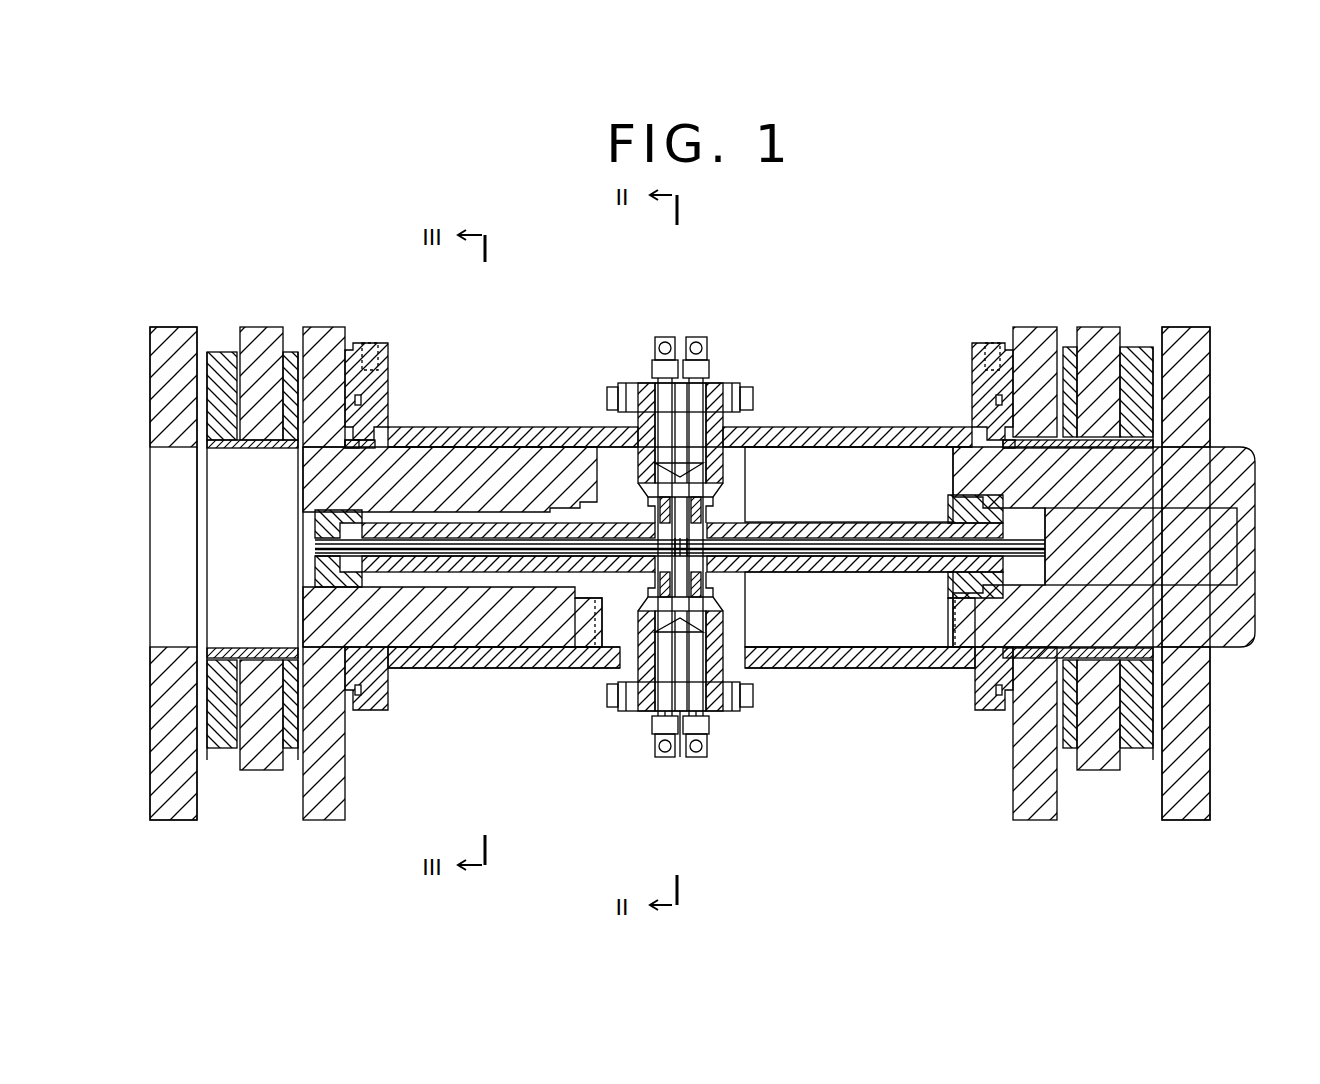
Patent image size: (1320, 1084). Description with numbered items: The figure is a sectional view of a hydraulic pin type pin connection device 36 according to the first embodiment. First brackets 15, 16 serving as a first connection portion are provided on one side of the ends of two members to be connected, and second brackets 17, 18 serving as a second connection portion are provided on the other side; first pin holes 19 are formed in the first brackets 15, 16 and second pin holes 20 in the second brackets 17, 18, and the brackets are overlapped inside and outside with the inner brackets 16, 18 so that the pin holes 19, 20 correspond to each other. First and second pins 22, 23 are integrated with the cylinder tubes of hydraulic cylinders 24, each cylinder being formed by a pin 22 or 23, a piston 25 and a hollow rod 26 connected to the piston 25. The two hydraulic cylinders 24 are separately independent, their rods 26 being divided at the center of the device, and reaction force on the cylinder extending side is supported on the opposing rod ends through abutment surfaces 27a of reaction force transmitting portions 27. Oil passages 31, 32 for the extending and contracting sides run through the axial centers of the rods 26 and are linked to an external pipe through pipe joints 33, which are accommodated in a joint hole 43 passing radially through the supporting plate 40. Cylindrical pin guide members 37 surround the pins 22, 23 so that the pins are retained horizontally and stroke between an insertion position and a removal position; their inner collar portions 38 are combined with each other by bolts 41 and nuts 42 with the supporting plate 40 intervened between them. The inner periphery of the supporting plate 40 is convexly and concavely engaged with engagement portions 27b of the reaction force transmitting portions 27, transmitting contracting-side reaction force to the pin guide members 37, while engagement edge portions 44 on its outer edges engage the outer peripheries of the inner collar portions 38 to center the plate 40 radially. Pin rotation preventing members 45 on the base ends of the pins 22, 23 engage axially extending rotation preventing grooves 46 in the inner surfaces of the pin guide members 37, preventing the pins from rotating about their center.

The first bracket 15 is at (270, 327).
The first bracket 16 is at (320, 327).
The second bracket 17 is at (1098, 327).
The second bracket 18 is at (1033, 327).
The first pin hole 19 is at (262, 460).
The second pin hole 20 is at (1107, 450).
The first pin 22 is at (505, 445).
The second pin 23 is at (1218, 616).
The hydraulic cylinder 24 is at (462, 440).
The piston 25 is at (315, 568).
The hollow rod 26 is at (503, 573).
The reaction force transmitting portion 27 is at (643, 510).
The abutment surface 27a is at (708, 568).
The engagement portion 27b is at (708, 590).
The oil passage 31 is at (432, 575).
The oil passage 32 is at (490, 522).
The pipe joint 33 is at (696, 337).
The pin connection device 36 is at (845, 350).
The pin guide member 37 is at (468, 670).
The inner collar portion 38 is at (640, 388).
The supporting plate 40 is at (640, 465).
The bolt 41 is at (607, 398).
The nut 42 is at (753, 392).
The joint hole 43 is at (703, 712).
The engagement edge portion 44 is at (632, 712).
The pin rotation preventing member 45 is at (600, 600).
The rotation preventing groove 46 is at (428, 668).